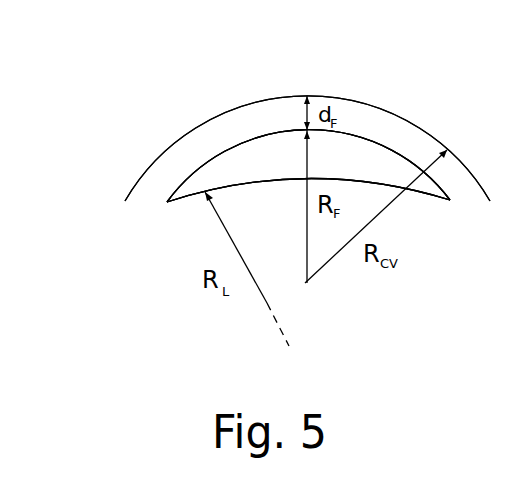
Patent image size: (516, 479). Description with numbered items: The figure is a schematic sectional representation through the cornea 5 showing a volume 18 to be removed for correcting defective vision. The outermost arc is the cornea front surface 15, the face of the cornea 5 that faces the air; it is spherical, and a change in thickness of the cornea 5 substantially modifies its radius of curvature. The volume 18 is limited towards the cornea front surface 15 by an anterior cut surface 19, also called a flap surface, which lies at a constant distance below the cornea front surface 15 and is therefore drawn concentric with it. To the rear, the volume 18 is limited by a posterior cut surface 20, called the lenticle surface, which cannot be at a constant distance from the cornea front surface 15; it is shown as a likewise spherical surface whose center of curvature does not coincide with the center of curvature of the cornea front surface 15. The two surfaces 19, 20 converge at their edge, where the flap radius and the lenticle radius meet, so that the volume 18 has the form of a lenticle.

The cornea 5 is at (127, 142).
The cornea front surface 15 is at (278, 96).
The volume 18 is at (232, 167).
The anterior cut surface 19 is at (383, 144).
The posterior cut surface 20 is at (286, 181).